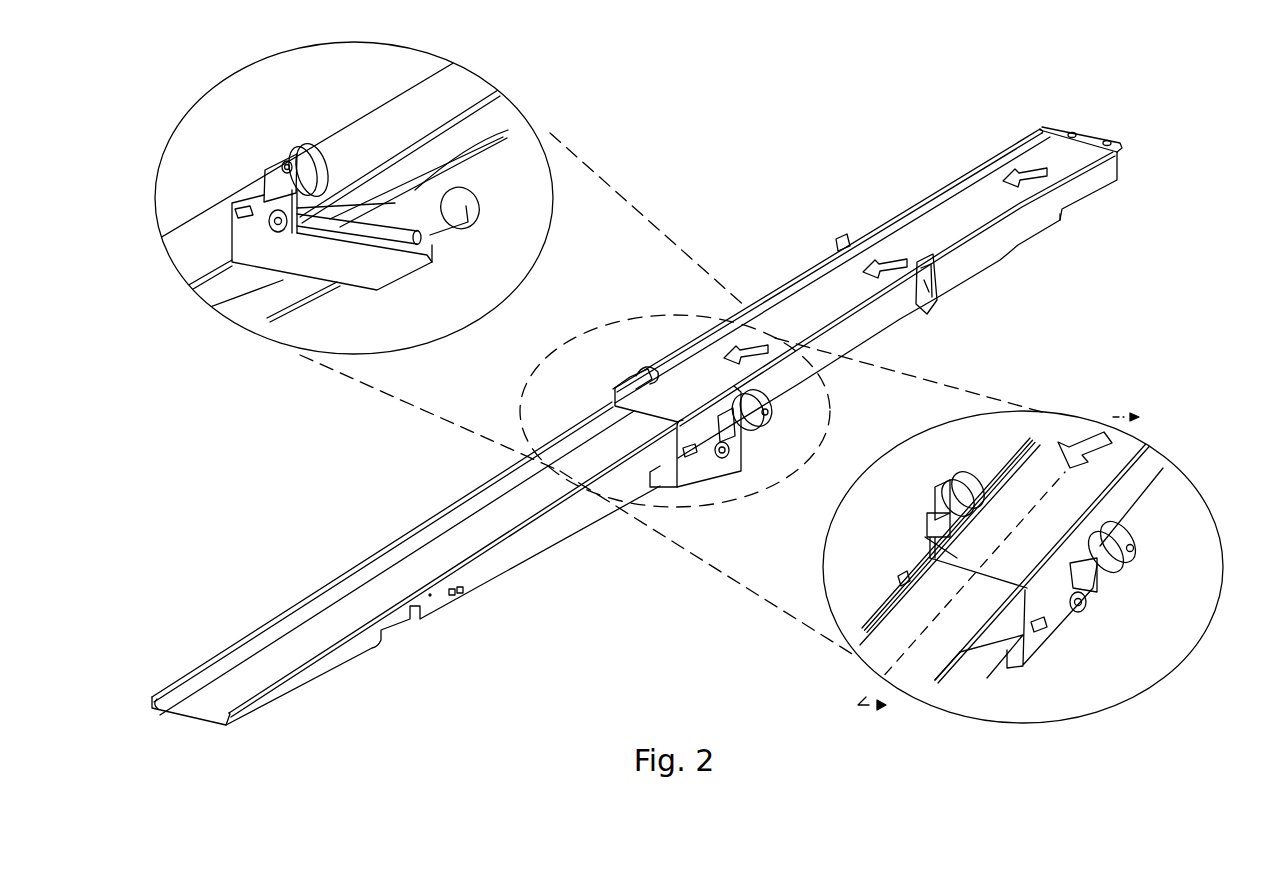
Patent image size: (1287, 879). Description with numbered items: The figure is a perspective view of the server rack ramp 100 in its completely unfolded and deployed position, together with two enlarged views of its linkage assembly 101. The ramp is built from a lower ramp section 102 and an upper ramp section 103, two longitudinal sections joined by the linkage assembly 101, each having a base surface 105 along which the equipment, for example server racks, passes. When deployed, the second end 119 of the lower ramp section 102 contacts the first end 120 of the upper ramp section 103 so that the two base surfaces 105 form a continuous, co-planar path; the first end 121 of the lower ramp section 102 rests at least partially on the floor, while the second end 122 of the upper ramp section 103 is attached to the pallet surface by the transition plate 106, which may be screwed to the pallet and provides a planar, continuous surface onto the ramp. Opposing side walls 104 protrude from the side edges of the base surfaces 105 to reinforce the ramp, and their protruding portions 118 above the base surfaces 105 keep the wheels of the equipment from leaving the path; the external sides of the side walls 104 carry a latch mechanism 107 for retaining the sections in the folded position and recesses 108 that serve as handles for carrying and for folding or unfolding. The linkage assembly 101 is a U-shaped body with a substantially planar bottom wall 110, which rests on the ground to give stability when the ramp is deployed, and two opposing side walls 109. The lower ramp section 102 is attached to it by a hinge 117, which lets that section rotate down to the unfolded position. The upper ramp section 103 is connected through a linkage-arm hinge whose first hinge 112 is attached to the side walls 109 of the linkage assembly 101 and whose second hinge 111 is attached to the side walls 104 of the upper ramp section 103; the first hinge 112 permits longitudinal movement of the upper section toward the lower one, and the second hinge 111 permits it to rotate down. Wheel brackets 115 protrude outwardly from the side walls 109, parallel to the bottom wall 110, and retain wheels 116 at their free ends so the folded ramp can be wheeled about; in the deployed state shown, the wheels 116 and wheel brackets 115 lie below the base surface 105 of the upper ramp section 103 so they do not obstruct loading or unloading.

The server rack ramp 100 is at (712, 196).
The linkage assembly 101 is at (606, 378).
The lower ramp section 102 is at (355, 554).
The upper ramp section 103 is at (945, 179).
The side walls 104 is at (897, 327).
The base surface 105 is at (932, 233).
The transition plate 106 is at (1070, 130).
The latch mechanism 107 is at (839, 240).
The recesses 108 is at (1035, 228).
The opposing side walls of linkage assembly 109 is at (237, 262).
The bottom wall 110 is at (403, 277).
The second hinge 111 is at (435, 241).
The first hinge 112 is at (292, 235).
The wheel brackets 115 is at (272, 163).
The wheels 116 is at (320, 143).
The hinge 117 is at (235, 215).
The protruding portions 118 is at (820, 327).
The second end of lower ramp section 119 is at (945, 672).
The first end of upper ramp section 120 is at (508, 130).
The first end of lower ramp section 121 is at (222, 673).
The second end of upper ramp section 122 is at (1020, 162).